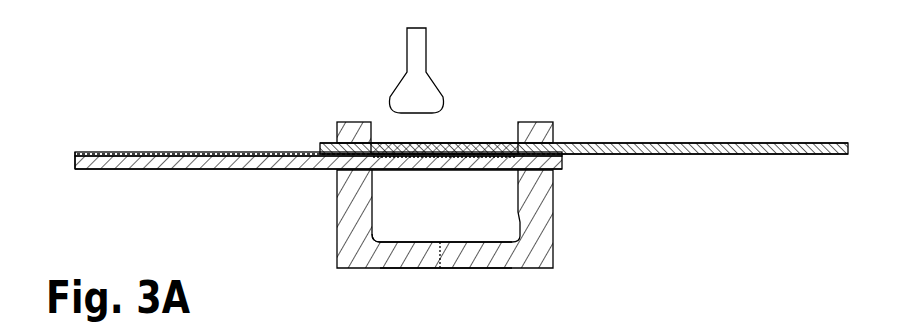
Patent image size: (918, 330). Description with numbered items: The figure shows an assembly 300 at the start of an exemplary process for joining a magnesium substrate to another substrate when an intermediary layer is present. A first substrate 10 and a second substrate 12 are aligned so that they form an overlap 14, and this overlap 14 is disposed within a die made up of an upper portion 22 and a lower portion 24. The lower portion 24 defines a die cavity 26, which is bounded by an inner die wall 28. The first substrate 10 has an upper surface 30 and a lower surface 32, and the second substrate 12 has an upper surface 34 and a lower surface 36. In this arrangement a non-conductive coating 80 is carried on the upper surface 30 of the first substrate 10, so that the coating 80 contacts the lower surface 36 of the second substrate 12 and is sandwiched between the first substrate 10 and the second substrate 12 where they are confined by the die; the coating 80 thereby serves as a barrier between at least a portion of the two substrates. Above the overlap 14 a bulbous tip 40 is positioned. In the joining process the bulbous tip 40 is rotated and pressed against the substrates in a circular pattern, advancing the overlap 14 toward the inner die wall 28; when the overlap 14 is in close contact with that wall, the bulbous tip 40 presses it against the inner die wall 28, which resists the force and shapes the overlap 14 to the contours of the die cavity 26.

The assembly 300 is at (690, 62).
The first substrate 10 is at (128, 158).
The upper surface 30 is at (75, 152).
The lower surface 32 is at (192, 170).
The non-conductive coating 80 is at (262, 152).
The second substrate 12 is at (738, 143).
The upper surface 34 is at (685, 143).
The lower surface 36 is at (692, 156).
The overlap 14 is at (458, 143).
The upper portion 22 is at (530, 128).
The lower portion 24 is at (535, 245).
The die cavity 26 is at (370, 205).
The inner die wall 28 is at (430, 236).
The bulbous tip 40 is at (418, 82).